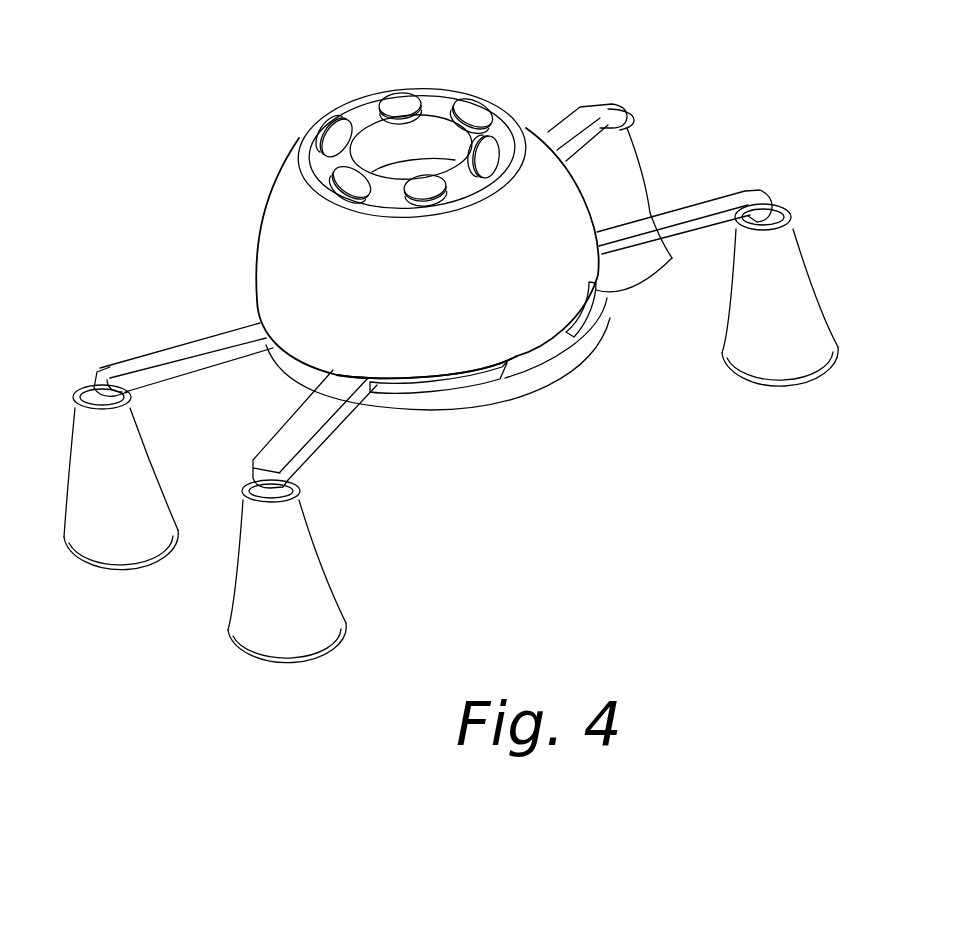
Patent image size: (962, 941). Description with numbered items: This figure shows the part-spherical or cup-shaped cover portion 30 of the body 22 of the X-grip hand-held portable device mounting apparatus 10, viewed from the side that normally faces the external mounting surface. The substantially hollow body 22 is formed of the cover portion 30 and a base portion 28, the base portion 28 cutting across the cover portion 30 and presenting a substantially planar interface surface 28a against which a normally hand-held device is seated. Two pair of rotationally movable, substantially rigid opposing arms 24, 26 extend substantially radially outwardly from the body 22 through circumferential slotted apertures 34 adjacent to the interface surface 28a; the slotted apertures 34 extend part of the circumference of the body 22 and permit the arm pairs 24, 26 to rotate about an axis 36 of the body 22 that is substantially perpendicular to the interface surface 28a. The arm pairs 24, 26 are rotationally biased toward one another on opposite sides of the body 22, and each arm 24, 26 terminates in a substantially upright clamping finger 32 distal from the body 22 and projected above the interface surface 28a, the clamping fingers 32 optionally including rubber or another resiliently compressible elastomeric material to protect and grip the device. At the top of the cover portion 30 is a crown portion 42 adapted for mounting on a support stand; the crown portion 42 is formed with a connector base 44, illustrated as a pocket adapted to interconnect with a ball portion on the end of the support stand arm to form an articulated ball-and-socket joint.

The mounting apparatus 10 is at (451, 336).
The body 22 is at (275, 238).
The arm 24 is at (567, 123).
The arm 26 is at (700, 208).
The base portion 28 is at (540, 365).
The interface surface 28a is at (493, 400).
The cover portion 30 is at (401, 332).
The clamping finger 32 is at (599, 209).
The slotted aperture 34 is at (585, 320).
The axis 36 is at (415, 165).
The crown portion 42 is at (355, 106).
The connector base 44 is at (437, 122).